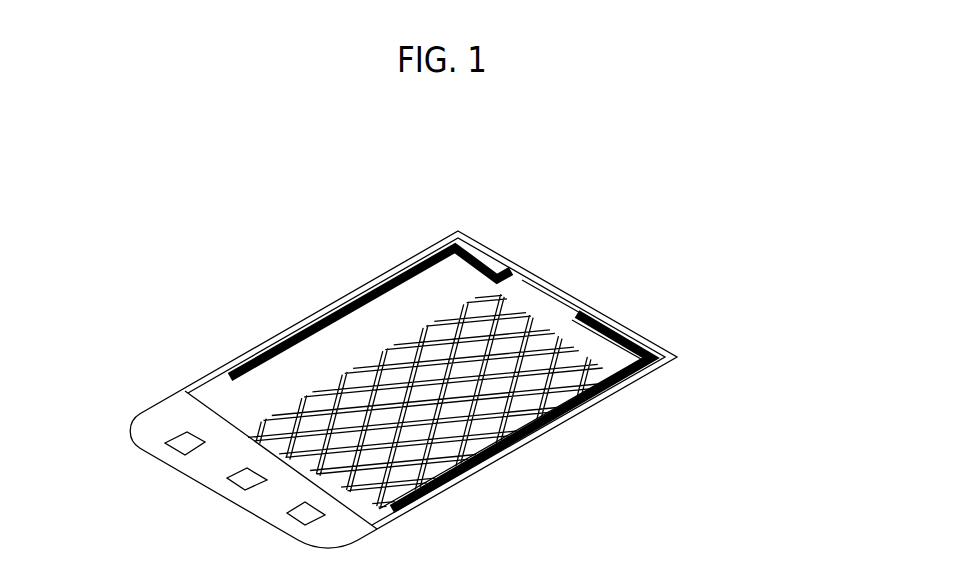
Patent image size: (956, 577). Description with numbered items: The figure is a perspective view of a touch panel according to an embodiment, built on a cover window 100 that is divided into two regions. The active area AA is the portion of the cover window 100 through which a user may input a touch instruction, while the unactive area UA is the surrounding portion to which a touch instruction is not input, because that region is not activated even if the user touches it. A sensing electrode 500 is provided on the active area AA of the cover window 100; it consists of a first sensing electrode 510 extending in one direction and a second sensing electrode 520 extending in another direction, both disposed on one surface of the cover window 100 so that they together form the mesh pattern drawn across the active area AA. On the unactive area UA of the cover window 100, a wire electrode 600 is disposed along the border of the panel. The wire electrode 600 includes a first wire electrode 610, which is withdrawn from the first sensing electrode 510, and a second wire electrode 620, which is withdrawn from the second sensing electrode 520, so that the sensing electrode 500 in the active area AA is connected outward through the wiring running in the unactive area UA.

The cover window 100 is at (192, 378).
The unactive area UA is at (217, 466).
The active area AA is at (513, 424).
The sensing electrode 500 is at (495, 378).
The first sensing electrode 510 is at (570, 378).
The second sensing electrode 520 is at (575, 360).
The wire electrode 600 is at (426, 327).
The first wire electrode 610 is at (418, 254).
The second wire electrode 620 is at (562, 285).